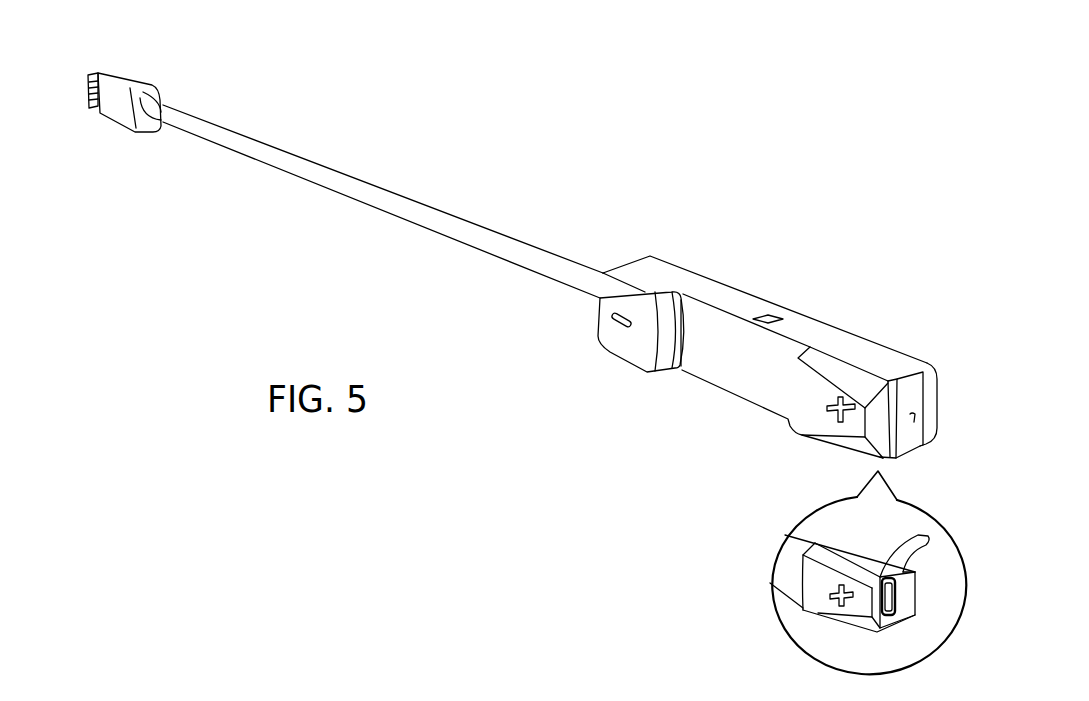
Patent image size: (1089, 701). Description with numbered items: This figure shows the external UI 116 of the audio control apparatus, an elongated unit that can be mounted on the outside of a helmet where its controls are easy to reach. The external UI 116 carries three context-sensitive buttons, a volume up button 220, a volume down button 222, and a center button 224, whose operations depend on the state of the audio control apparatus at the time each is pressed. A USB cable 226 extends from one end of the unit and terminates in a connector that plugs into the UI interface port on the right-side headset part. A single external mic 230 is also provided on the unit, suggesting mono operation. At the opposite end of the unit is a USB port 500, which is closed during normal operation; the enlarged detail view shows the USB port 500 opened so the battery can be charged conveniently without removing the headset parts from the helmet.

The external UI 116 is at (745, 336).
The volume up button 220 is at (820, 372).
The volume down button 222 is at (617, 330).
The center button 224 is at (743, 357).
The USB cable 226 is at (330, 172).
The external mic 230 is at (767, 314).
The USB port 500 is at (913, 433).